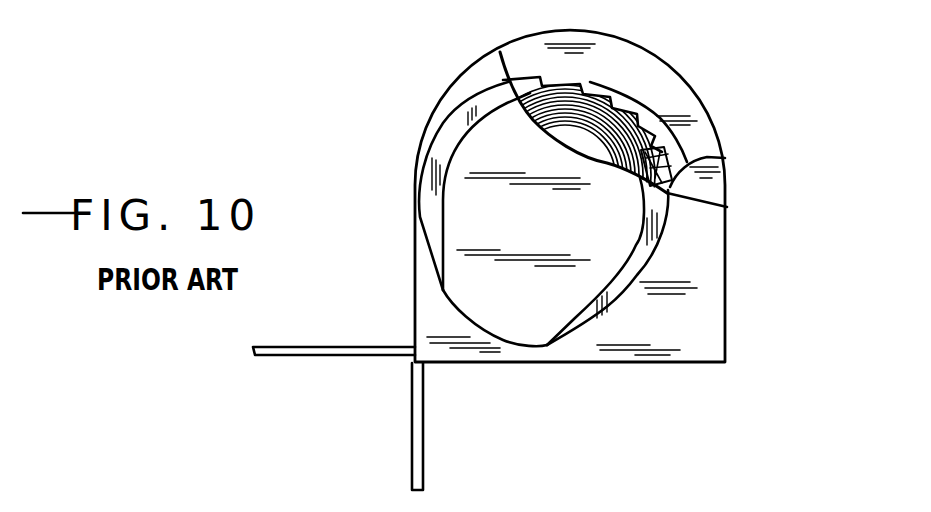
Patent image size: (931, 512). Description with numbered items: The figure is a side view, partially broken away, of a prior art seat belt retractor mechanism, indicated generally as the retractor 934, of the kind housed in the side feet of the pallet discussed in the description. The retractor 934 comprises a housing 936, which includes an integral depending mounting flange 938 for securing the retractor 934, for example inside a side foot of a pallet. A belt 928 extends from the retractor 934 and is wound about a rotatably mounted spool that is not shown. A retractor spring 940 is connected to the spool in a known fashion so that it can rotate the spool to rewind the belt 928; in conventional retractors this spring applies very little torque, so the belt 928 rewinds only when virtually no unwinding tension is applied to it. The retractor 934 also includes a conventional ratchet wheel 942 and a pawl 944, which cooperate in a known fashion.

The belt 928 is at (300, 347).
The retractor 934 is at (742, 108).
The housing 936 is at (727, 342).
The mounting flange 938 is at (427, 432).
The retractor spring 940 is at (645, 105).
The ratchet wheel 942 is at (597, 88).
The pawl 944 is at (725, 158).